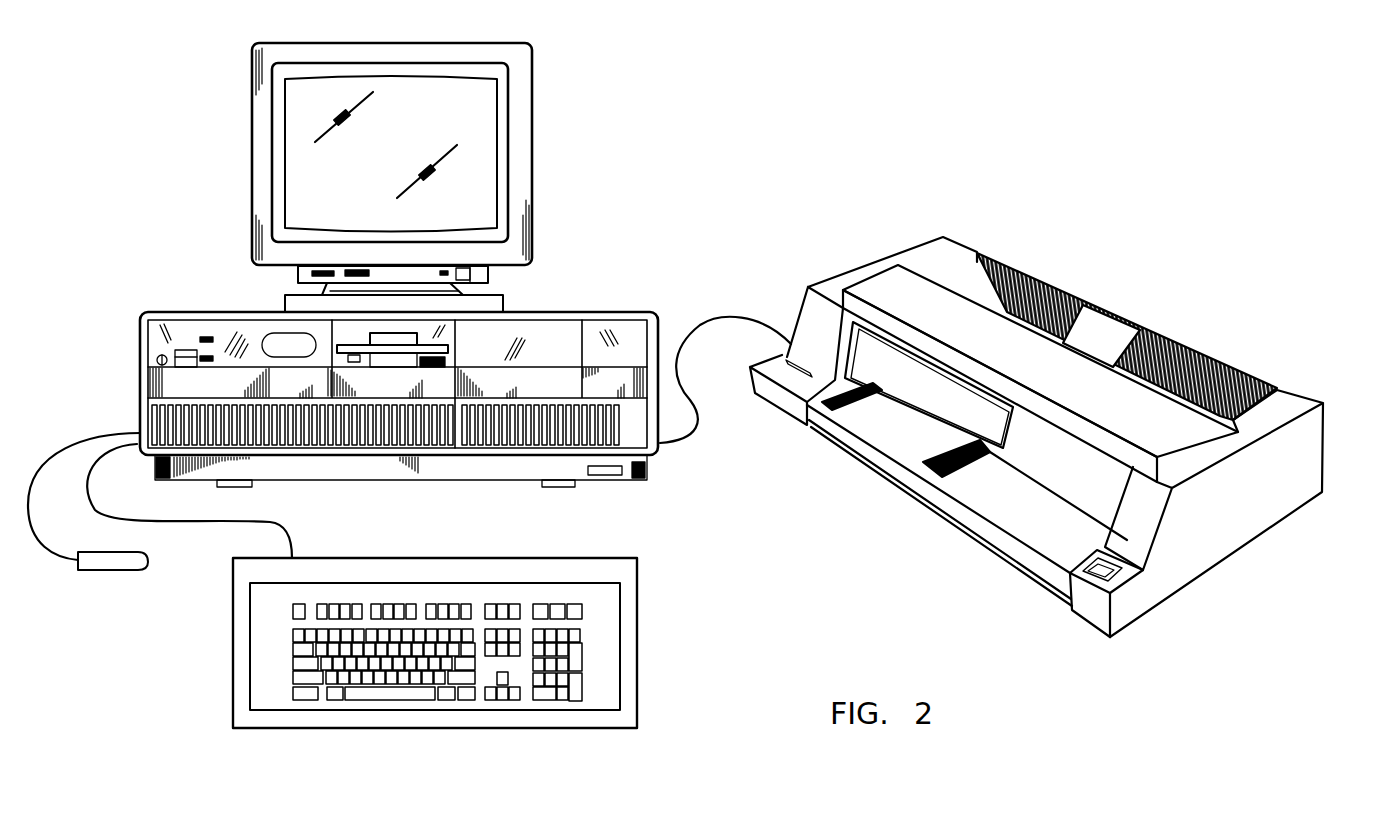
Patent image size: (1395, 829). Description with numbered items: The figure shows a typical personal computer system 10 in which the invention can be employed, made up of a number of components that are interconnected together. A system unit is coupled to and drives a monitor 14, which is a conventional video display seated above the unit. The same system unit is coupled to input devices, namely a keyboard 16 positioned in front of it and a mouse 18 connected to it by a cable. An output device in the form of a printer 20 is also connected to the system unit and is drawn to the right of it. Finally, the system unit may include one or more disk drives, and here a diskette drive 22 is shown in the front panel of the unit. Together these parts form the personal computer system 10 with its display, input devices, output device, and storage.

The personal computer system 10 is at (715, 157).
The monitor 14 is at (532, 160).
The keyboard 16 is at (637, 608).
The mouse 18 is at (118, 571).
The printer 20 is at (1297, 387).
The diskette drive 22 is at (400, 365).